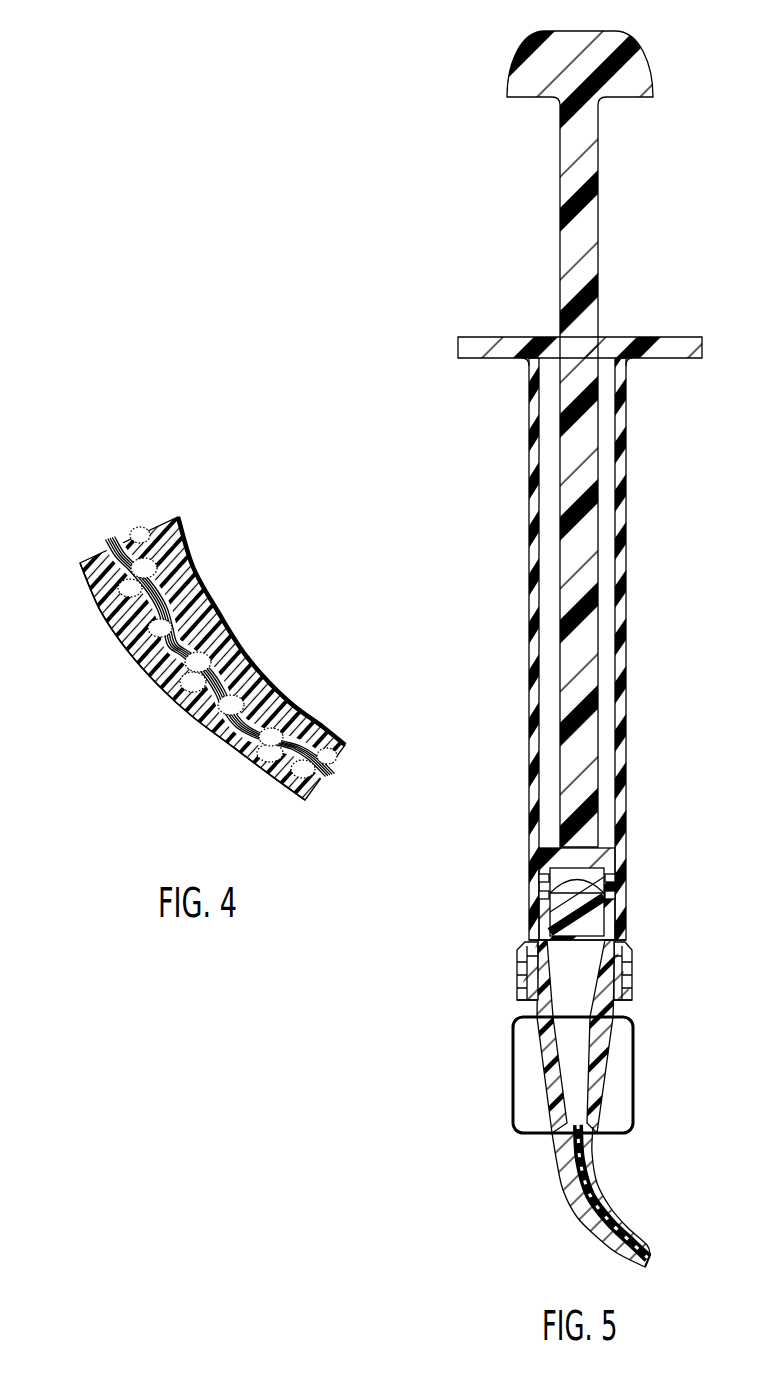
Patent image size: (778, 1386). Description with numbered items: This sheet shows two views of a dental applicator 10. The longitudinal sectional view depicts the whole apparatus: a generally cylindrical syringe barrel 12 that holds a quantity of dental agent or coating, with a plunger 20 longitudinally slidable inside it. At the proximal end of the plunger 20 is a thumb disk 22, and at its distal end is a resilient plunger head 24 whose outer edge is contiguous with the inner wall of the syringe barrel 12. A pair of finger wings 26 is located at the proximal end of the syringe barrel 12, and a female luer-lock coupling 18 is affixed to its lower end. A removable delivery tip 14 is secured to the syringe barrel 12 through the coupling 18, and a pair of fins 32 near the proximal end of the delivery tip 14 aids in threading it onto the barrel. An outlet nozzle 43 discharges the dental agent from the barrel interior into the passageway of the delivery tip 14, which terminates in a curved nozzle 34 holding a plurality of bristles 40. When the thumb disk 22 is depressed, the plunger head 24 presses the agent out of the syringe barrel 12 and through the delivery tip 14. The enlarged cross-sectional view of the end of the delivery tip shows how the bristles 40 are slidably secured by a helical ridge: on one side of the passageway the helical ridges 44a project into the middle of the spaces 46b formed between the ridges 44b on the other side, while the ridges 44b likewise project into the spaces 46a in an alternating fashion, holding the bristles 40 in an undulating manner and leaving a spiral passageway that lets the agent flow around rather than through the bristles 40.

In FIG. 5, the applicator 10 is at (645, 727).
In FIG. 5, the syringe barrel 12 is at (625, 832).
In FIG. 5, the delivery tip 14 is at (551, 1187).
In FIG. 5, the female luer-lock coupling 18 is at (627, 953).
In FIG. 5, the plunger 20 is at (592, 247).
In FIG. 5, the thumb disk 22 is at (626, 37).
In FIG. 5, the plunger head 24 is at (580, 912).
In FIG. 5, the finger wings 26 is at (462, 337).
In FIG. 5, the fins 32 is at (522, 1083).
In FIG. 4, the nozzle 34 is at (225, 627).
In FIG. 5, the nozzle 34 is at (596, 1158).
In FIG. 4, the bristles 40 is at (333, 770).
In FIG. 5, the bristles 40 is at (652, 1256).
In FIG. 5, the outlet nozzle 43 is at (573, 1000).
In FIG. 4, the helical ridges 44a is at (110, 613).
In FIG. 4, the helical ridges 44b is at (213, 613).
In FIG. 4, the spaces 46a is at (133, 602).
In FIG. 4, the spaces 46b is at (206, 582).